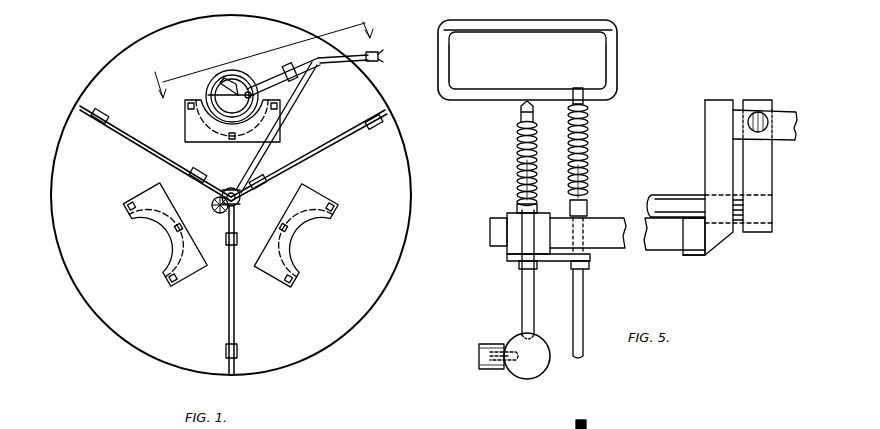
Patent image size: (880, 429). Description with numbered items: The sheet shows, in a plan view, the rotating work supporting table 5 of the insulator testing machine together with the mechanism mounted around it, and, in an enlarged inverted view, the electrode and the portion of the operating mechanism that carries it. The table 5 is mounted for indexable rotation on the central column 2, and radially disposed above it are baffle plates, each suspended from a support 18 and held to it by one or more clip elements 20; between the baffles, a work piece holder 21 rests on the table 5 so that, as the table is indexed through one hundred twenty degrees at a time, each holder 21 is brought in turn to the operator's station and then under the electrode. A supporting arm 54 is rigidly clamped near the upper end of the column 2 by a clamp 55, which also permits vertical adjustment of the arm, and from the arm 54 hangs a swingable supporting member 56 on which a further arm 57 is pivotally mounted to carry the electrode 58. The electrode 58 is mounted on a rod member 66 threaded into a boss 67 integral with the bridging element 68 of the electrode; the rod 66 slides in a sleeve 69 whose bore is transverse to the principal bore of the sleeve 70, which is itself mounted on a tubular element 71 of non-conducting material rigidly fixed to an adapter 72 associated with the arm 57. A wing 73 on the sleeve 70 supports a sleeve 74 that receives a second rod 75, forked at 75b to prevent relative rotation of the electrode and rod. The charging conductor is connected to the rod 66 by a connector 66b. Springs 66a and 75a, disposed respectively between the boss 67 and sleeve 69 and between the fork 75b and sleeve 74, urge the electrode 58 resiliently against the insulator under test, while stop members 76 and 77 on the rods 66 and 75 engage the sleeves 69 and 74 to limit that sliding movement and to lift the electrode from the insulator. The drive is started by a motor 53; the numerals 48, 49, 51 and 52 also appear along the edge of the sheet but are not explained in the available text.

In FIG. 1, the central column 2 is at (232, 187).
In FIG. 1, the work supporting table 5 is at (408, 216).
In FIG. 1, the support 18 is at (82, 108).
In FIG. 1, the clip element 20 is at (262, 183).
In FIG. 1, the work piece holder 21 is at (283, 134).
In FIG. 1, the supporting arm 54 is at (300, 99).
In FIG. 5, the supporting arm 54 is at (676, 195).
In FIG. 1, the clamp 55 is at (220, 213).
In FIG. 1, the supporting member 56 is at (318, 66).
In FIG. 5, the supporting member 56 is at (766, 165).
In FIG. 1, the arm 57 is at (372, 52).
In FIG. 5, the arm 57 is at (782, 112).
In FIG. 1, the electrode 58 is at (231, 74).
In FIG. 5, the electrode 58 is at (604, 60).
In FIG. 1, the rod member 66 is at (231, 108).
In FIG. 5, the rod member 66 is at (517, 152).
In FIG. 5, the spring 66a is at (535, 178).
In FIG. 5, the connector 66b is at (480, 356).
In FIG. 5, the boss 67 is at (519, 114).
In FIG. 1, the bridging element 68 is at (215, 101).
In FIG. 5, the bridging element 68 is at (604, 93).
In FIG. 5, the sleeve 69 is at (516, 207).
In FIG. 1, the sleeve 70 is at (215, 84).
In FIG. 5, the sleeve 70 is at (510, 245).
In FIG. 1, the tubular element 71 is at (276, 70).
In FIG. 5, the tubular element 71 is at (658, 252).
In FIG. 5, the adapter 72 is at (716, 240).
In FIG. 1, the wing 73 is at (242, 80).
In FIG. 5, the wing 73 is at (534, 330).
In FIG. 5, the sleeve 74 is at (588, 210).
In FIG. 5, the rod 75 is at (590, 151).
In FIG. 5, the spring 75a is at (588, 192).
In FIG. 5, the fork 75b is at (578, 88).
In FIG. 5, the stop member 76 is at (515, 263).
In FIG. 5, the stop member 77 is at (590, 265).
In FIG. 5, the nub 48 is at (584, 426).
In FIG. 5, the element 49 is at (513, 423).
In FIG. 5, the element 51 is at (648, 423).
In FIG. 5, the element 52 is at (700, 423).
In FIG. 5, the motor 53 is at (750, 423).